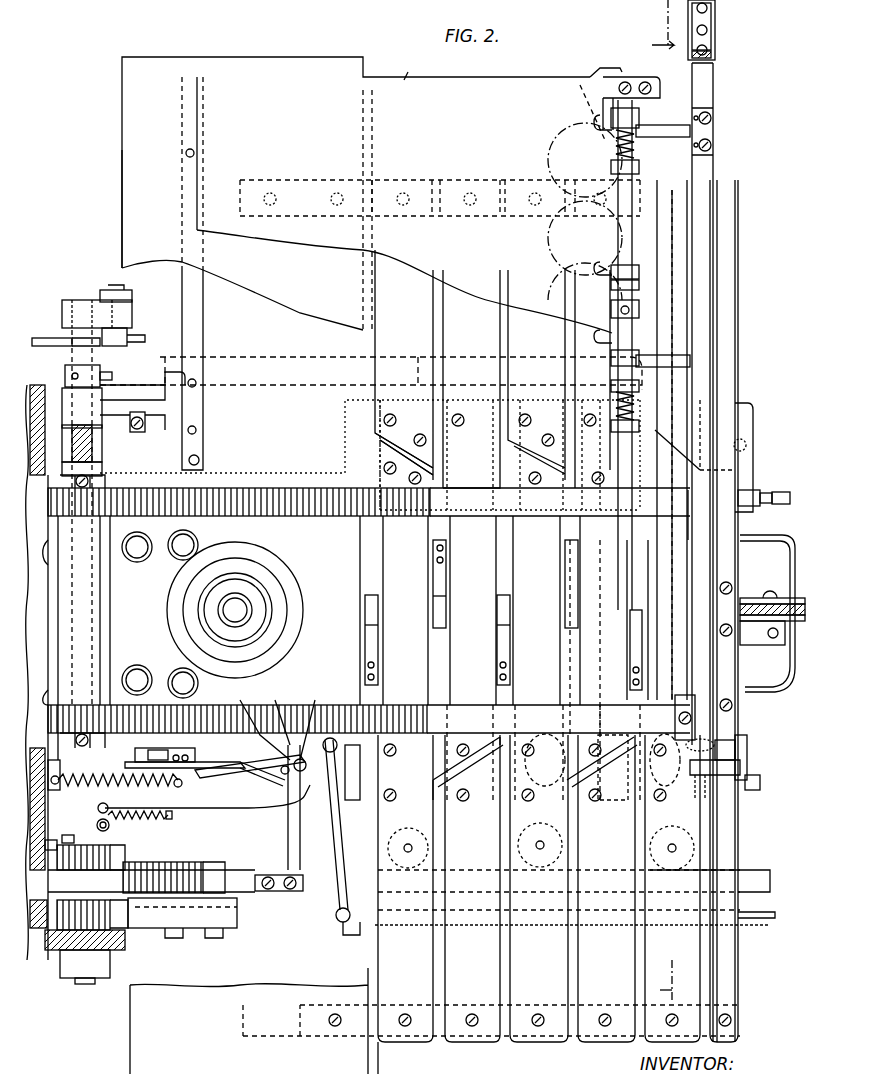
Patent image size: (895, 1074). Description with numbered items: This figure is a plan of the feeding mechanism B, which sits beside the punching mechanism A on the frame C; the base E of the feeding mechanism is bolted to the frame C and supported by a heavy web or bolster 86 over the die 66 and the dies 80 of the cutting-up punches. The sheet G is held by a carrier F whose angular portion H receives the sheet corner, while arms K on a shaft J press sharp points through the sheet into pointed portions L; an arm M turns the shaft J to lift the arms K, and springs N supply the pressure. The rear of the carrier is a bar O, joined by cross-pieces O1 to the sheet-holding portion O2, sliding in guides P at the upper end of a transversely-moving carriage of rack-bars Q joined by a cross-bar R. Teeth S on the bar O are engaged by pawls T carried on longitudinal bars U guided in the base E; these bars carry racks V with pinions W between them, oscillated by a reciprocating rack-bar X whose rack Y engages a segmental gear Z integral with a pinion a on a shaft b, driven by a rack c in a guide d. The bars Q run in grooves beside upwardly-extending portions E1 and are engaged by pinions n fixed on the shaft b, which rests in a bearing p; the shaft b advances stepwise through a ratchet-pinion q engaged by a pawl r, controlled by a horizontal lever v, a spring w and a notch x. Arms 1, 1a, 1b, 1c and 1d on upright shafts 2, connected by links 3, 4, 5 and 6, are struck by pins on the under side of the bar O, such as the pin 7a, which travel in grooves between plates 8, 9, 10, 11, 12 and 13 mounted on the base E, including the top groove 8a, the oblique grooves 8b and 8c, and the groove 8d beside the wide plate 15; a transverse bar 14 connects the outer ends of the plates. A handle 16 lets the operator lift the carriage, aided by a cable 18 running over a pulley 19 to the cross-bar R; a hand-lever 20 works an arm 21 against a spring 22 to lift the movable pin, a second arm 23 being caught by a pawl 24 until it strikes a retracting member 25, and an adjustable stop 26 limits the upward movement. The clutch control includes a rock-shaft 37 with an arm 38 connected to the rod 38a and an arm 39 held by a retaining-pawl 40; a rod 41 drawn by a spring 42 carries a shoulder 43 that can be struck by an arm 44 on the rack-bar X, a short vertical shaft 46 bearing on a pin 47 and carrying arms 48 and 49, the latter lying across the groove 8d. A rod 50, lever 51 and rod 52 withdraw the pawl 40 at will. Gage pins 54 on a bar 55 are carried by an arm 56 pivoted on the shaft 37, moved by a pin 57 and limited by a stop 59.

The arm 1 is at (748, 446).
The arm 1a is at (548, 752).
The arm 1b is at (545, 485).
The arm 1c is at (500, 735).
The arm 1d is at (432, 480).
The vertical shaft 2 is at (545, 746).
The link 3 is at (36, 940).
The link 4 is at (575, 645).
The link 5 is at (677, 438).
The link 6 is at (605, 502).
The pin 7a is at (718, 25).
The plate 8 is at (724, 611).
The groove 8a is at (715, 982).
The oblique groove 8b is at (735, 450).
The groove 8c is at (613, 772).
The groove 8d is at (378, 990).
The plate 9 is at (672, 888).
The plate 10 is at (505, 646).
The plate 11 is at (560, 656).
The plate 12 is at (405, 888).
The plate 13 is at (471, 379).
The transverse bar 14 is at (398, 1060).
The plate 15 is at (140, 209).
The handle 16 is at (795, 560).
The cable 18 is at (787, 612).
The pulley 19 is at (805, 600).
The hand-lever 20 is at (715, 745).
The arm 21 is at (750, 752).
The spring 22 is at (750, 735).
The second arm 23 is at (710, 778).
The pawl 24 is at (740, 788).
The retracting member 25 is at (762, 780).
The adjustable stop 26 is at (792, 498).
The rock-shaft 37 is at (82, 296).
The arm 38 is at (135, 318).
The rod 38a is at (45, 338).
The arm 39 is at (135, 752).
The retaining-pawl 40 is at (160, 755).
The rod 41 is at (225, 755).
The spring 42 is at (116, 793).
The shoulder 43 is at (318, 790).
The arm 44 is at (288, 840).
The short vertical shaft 46 is at (252, 757).
The pin 47 is at (258, 720).
The arm 48 is at (273, 712).
The arm 49 is at (304, 720).
The rod 50 is at (272, 790).
The lever 51 is at (330, 900).
The rod 52 is at (352, 935).
The gage pins 54 is at (198, 460).
The bar 55 is at (200, 330).
The arm 56 is at (165, 385).
The pin 57 is at (65, 372).
The stop 59 is at (140, 435).
The die 66 is at (290, 575).
The dies 80 is at (200, 540).
The web or bolster 86 is at (222, 658).
The punching mechanism A is at (319, 545).
The feeding mechanism B is at (381, 195).
The frame C is at (359, 609).
The base E is at (272, 905).
The upwardly-extending portions E1 is at (457, 584).
The carrier F is at (638, 99).
The sheet G is at (401, 65).
The upwardly-projecting portion H is at (601, 91).
The shaft J is at (640, 255).
The arms K is at (641, 274).
The projecting portions L is at (630, 312).
The arm M is at (640, 312).
The springs N is at (640, 385).
The bar O is at (710, 165).
The cross-pieces O1 is at (642, 117).
The sheet-holding portion O2 is at (663, 252).
The guides P is at (685, 690).
The rack-bars Q is at (596, 627).
The cross-bar R is at (740, 665).
The teeth S is at (41, 786).
The pawls T is at (512, 605).
The longitudinal bars U is at (410, 925).
The racks V is at (541, 828).
The pinion W is at (572, 879).
The rack-bar X is at (416, 894).
The rack Y is at (198, 862).
The segmental gear Z is at (114, 852).
The pinion a is at (110, 912).
The shaft b is at (78, 990).
The rack c is at (40, 955).
The guide d is at (85, 963).
The pinions n is at (39, 619).
The bearing p is at (95, 445).
The ratchet-pinion q is at (131, 847).
The pawl r is at (51, 831).
The horizontal lever v is at (70, 826).
The spring w is at (150, 822).
The notch x is at (115, 824).